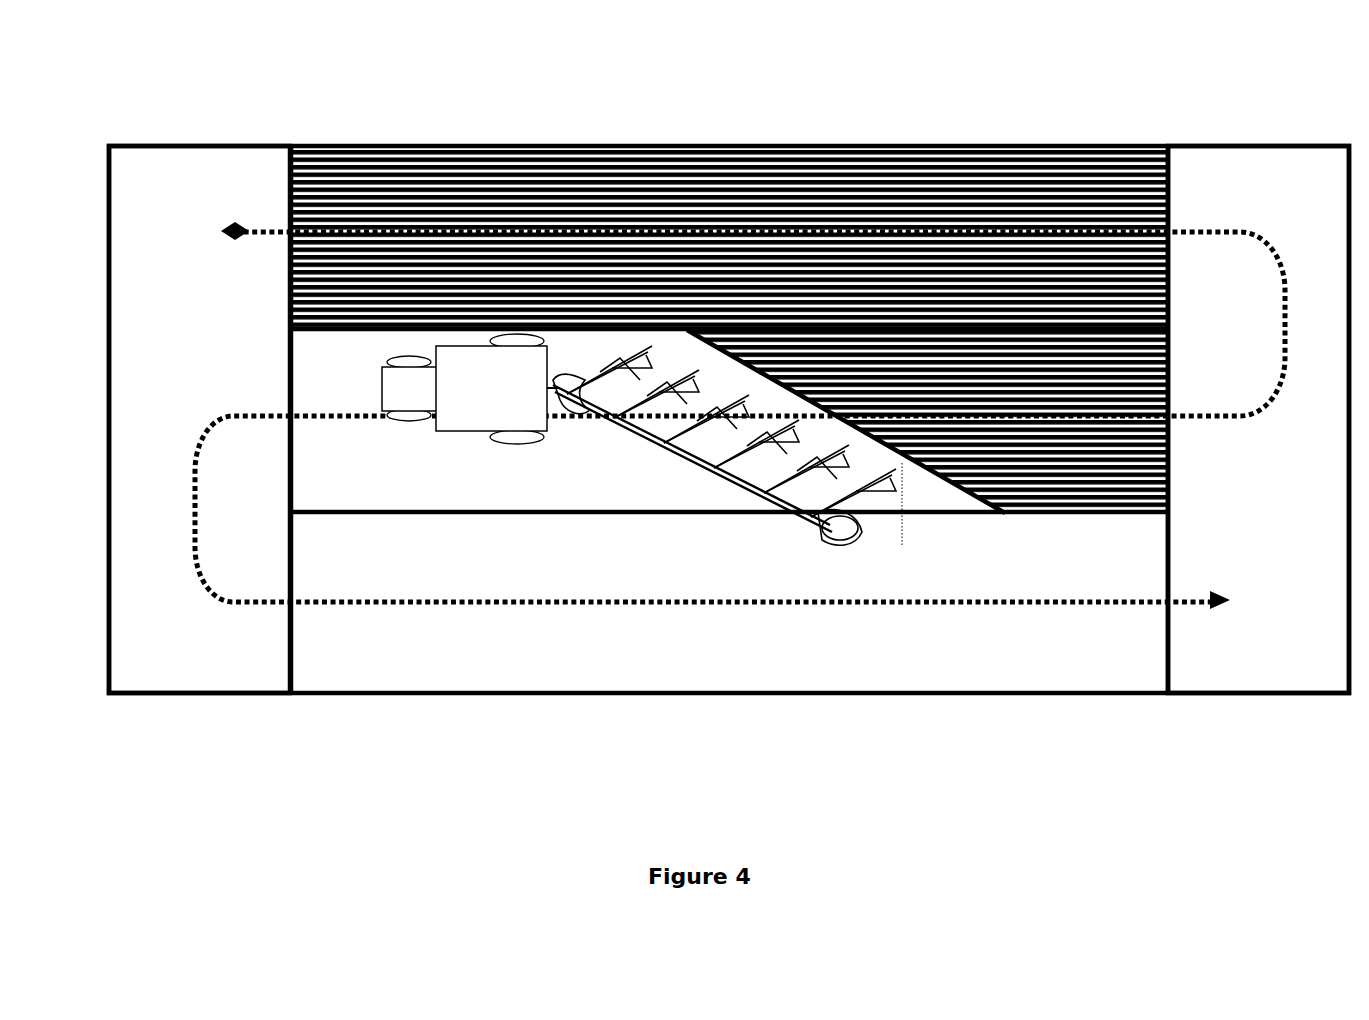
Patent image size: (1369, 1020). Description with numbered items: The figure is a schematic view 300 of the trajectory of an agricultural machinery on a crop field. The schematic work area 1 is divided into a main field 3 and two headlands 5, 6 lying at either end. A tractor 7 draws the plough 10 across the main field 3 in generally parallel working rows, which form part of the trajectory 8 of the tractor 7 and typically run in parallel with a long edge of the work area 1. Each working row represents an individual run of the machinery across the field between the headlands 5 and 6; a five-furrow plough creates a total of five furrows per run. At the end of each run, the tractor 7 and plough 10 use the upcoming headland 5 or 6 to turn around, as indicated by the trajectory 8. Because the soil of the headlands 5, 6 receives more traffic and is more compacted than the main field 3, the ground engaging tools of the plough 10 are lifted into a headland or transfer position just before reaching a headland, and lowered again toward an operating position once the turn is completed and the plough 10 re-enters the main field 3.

The field representation 300 is at (98, 83).
The work area 1 is at (1186, 108).
The main field 3 is at (840, 128).
The headland 5 is at (1258, 208).
The headland 6 is at (203, 367).
The tractor 7 is at (492, 340).
The trajectory 8 is at (1072, 603).
The plough 10 is at (693, 440).